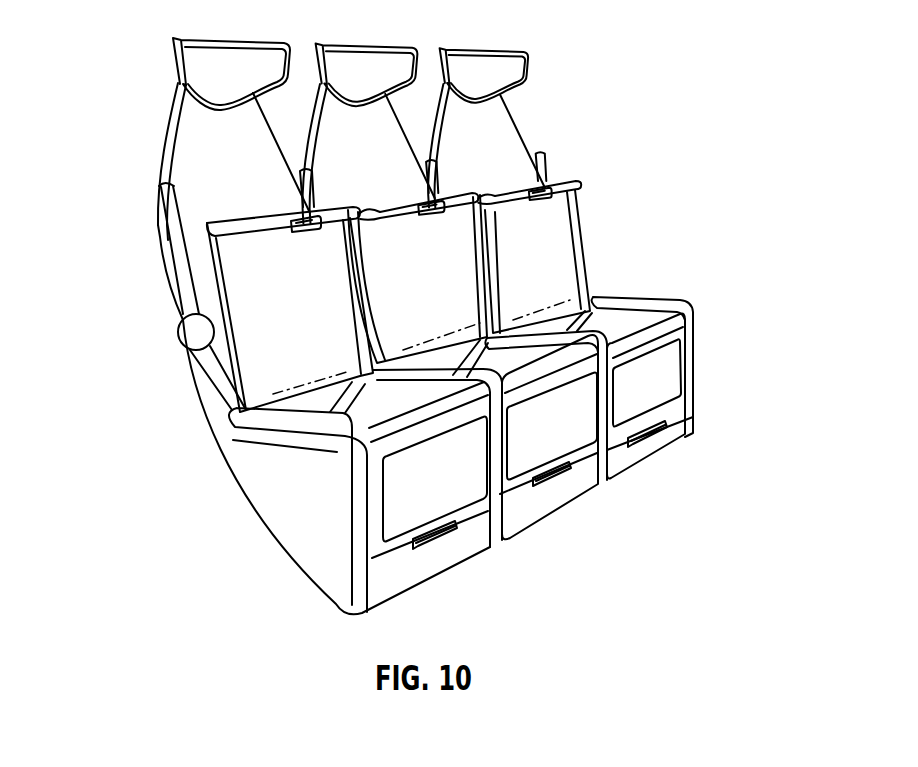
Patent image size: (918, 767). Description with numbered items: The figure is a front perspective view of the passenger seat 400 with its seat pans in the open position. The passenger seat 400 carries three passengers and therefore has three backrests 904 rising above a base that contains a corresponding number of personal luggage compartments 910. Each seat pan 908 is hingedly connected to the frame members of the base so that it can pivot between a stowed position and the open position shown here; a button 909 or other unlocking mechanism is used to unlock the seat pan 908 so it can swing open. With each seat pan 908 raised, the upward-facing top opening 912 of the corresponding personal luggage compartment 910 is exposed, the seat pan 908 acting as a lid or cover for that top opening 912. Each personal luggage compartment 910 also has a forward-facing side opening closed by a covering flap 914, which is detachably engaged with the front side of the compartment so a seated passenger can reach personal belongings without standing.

The passenger seat 400 is at (698, 32).
The backrest 904 is at (170, 128).
The seat pan 908 is at (312, 329).
The button 909 is at (296, 214).
The personal luggage compartment 910 is at (417, 405).
The top opening 912 is at (385, 420).
The covering flap 914 is at (412, 510).